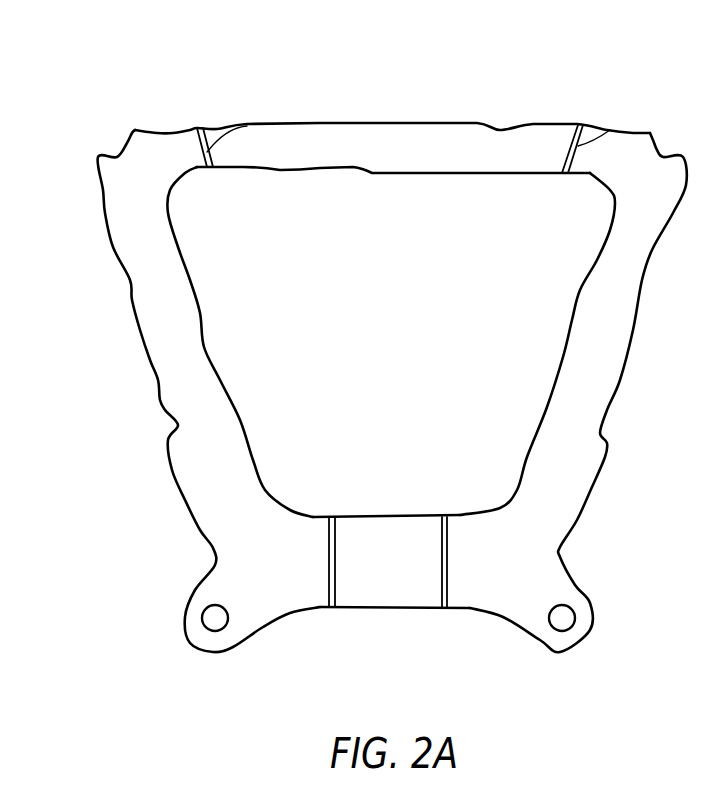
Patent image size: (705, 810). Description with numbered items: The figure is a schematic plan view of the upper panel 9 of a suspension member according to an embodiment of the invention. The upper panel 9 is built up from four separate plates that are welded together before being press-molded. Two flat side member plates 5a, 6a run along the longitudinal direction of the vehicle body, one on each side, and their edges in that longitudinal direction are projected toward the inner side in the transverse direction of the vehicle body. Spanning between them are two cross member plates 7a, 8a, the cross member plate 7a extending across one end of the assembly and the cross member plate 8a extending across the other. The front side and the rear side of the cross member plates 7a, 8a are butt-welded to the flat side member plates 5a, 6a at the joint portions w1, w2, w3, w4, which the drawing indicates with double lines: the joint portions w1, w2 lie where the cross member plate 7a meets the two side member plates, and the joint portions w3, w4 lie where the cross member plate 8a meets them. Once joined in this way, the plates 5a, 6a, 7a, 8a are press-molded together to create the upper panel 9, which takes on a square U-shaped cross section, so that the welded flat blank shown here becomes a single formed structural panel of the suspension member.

The flat side member plate 5a is at (607, 330).
The flat side member plate 6a is at (157, 340).
The cross member plate 7a is at (358, 143).
The cross member plate 8a is at (393, 587).
The upper panel 9 is at (437, 120).
The joint portion w1 is at (610, 130).
The joint portion w2 is at (247, 126).
The joint portion w3 is at (447, 575).
The joint portion w4 is at (337, 573).